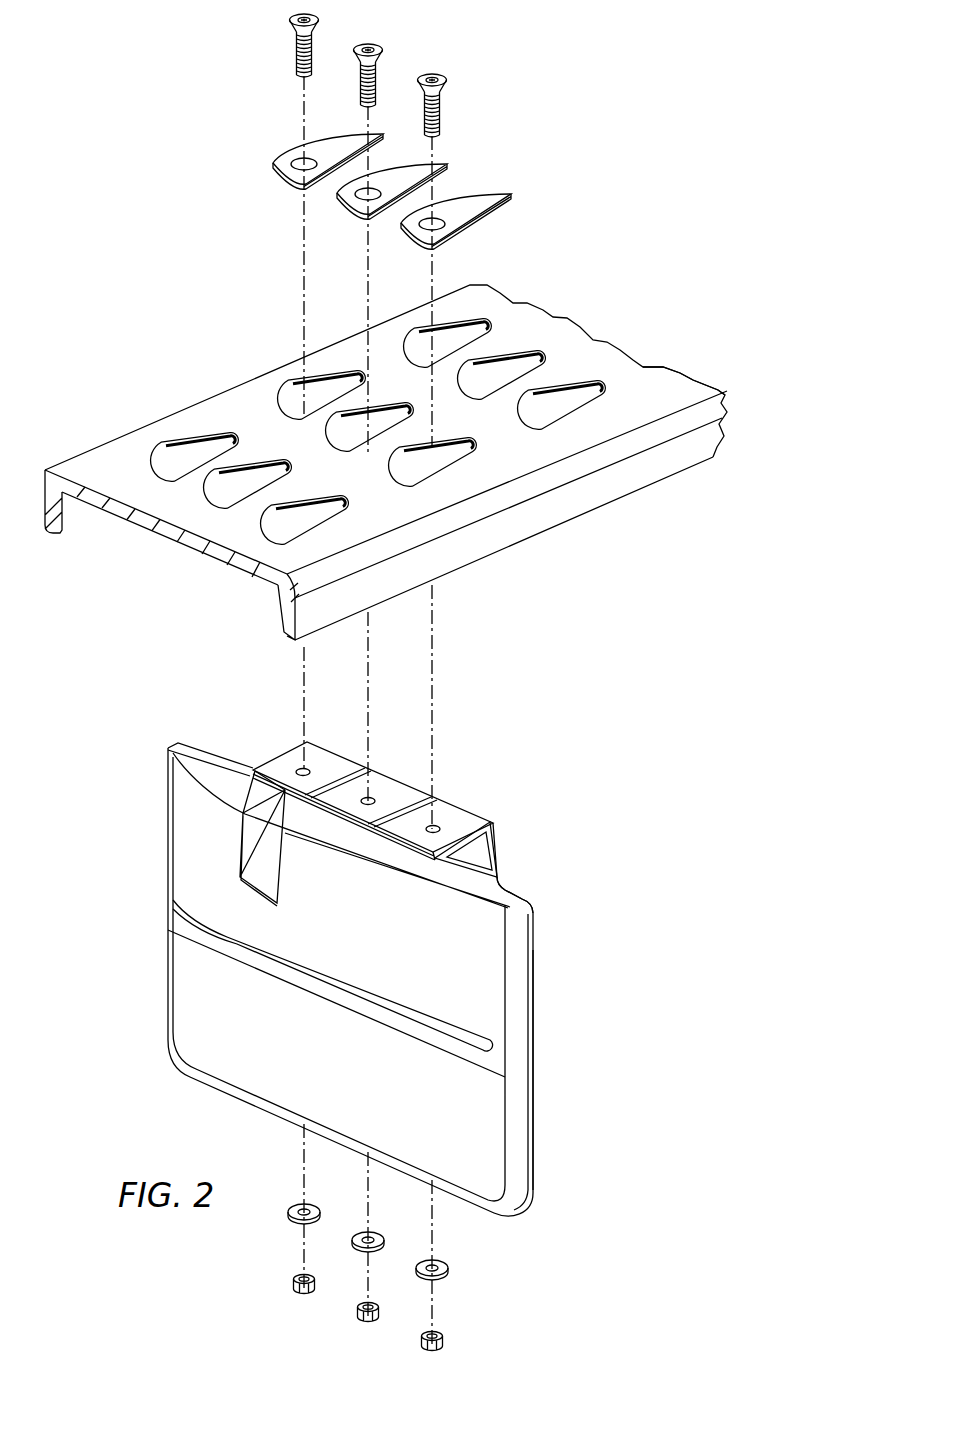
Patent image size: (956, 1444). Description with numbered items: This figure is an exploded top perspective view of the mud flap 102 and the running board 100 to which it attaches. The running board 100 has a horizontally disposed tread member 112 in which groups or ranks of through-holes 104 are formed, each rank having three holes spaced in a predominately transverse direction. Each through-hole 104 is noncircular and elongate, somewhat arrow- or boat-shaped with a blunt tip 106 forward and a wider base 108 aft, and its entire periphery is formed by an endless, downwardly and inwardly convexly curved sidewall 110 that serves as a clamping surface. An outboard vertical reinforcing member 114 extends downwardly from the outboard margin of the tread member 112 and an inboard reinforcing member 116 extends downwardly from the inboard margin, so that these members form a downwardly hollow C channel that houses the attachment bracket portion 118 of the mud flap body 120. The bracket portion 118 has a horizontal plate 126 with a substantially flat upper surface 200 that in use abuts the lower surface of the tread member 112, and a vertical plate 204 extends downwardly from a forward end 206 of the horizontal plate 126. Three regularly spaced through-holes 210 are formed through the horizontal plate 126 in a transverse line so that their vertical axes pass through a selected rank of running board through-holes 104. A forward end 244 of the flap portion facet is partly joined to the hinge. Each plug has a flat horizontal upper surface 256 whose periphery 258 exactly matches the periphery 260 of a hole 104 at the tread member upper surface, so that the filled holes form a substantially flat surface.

The running board 100 is at (91, 434).
The mud flap 102 is at (543, 1099).
The through-holes 104 is at (553, 410).
The blunt tip 106 is at (220, 452).
The wider base 108 is at (168, 472).
The sidewall 110 is at (420, 337).
The tread member 112 is at (660, 365).
The outboard vertical reinforcing member 114 is at (287, 630).
The inboard reinforcing member 116 is at (75, 535).
The bracket portion 118 is at (498, 842).
The mud flap body 120 is at (163, 1015).
The horizontal plate 126 is at (405, 833).
The upper surface 200 is at (320, 758).
The vertical plate 204 is at (500, 857).
The forward end 206 is at (480, 820).
The through-holes 210 is at (300, 768).
The forward end 244 is at (207, 750).
The upper surface 256 is at (327, 147).
The periphery 258 is at (278, 158).
The periphery 260 is at (287, 397).